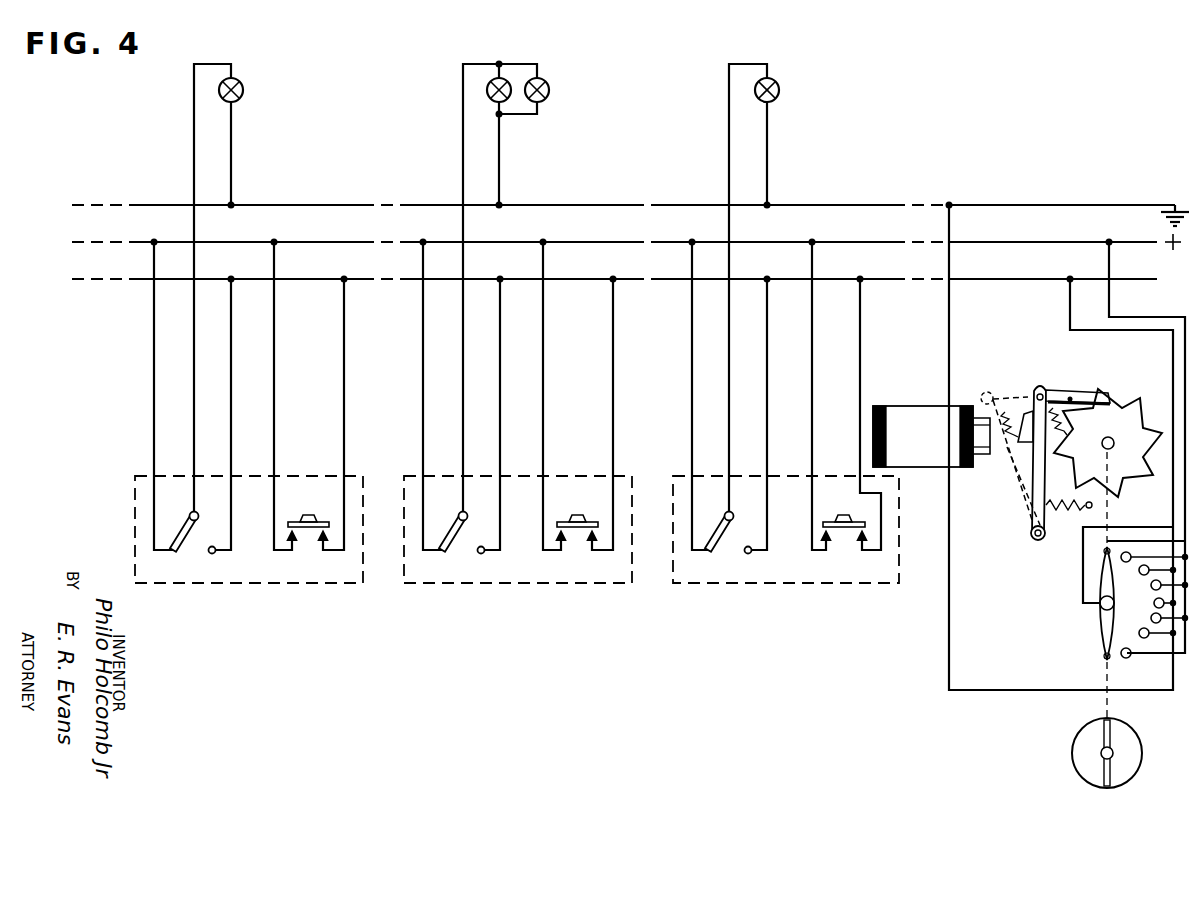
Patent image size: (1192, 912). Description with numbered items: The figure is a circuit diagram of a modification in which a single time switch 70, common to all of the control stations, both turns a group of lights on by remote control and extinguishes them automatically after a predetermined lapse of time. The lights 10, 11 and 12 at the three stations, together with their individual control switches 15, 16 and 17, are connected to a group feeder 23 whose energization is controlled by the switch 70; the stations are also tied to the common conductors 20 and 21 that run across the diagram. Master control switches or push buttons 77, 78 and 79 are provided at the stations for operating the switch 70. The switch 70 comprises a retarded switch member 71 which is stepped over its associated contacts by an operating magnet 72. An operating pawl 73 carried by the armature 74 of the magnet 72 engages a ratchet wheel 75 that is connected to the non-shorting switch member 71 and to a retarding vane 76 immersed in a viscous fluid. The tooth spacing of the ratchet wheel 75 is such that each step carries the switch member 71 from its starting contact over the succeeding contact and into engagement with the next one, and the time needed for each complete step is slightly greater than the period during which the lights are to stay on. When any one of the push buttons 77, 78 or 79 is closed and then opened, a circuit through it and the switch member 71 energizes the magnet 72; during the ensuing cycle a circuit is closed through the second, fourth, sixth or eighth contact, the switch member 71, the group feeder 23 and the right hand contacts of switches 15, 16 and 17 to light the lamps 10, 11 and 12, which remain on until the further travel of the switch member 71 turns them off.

The light 10 is at (240, 83).
The light 11 is at (535, 73).
The light 12 is at (777, 84).
The individual control switch 15 is at (186, 530).
The individual control switch 16 is at (455, 530).
The individual control switch 17 is at (721, 530).
The ground conductor 20 is at (297, 204).
The positive conductor 21 is at (297, 241).
The group feeder 23 is at (297, 278).
The time switch 70 is at (1010, 561).
The retarded switch member 71 is at (1103, 622).
The operating magnet 72 is at (927, 458).
The operating pawl 73 is at (1082, 392).
The armature 74 is at (1038, 476).
The ratchet wheel 75 is at (1115, 406).
The retarding vane 76 is at (1100, 738).
The master control switch 77 is at (312, 515).
The master control switch 78 is at (581, 515).
The master control switch 79 is at (847, 515).